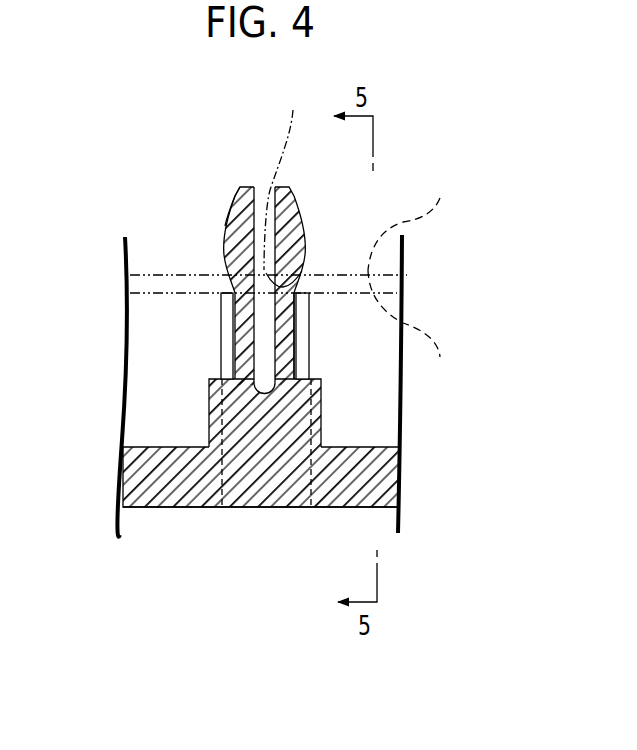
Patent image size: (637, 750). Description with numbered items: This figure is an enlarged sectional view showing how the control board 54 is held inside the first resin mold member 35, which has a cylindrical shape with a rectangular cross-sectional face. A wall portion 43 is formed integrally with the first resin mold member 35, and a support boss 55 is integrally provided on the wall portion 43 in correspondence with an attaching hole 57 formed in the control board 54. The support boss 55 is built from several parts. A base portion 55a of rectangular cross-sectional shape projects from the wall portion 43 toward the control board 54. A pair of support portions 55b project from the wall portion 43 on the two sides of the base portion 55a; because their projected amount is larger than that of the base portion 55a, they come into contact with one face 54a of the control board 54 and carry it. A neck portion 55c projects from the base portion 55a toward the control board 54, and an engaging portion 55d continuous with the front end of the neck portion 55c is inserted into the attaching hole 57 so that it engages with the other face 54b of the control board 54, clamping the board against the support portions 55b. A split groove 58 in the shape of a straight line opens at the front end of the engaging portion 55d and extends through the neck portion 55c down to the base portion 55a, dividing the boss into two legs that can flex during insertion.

The first resin mold member 35 is at (259, 511).
The wall portion 43 is at (168, 483).
The control board 54 is at (407, 278).
The one face of the control board 54a is at (412, 329).
The other face of the control board 54b is at (414, 219).
The support boss 55 is at (213, 238).
The base portion 55a is at (209, 417).
The support portion 55b is at (309, 308).
The neck portion 55c is at (220, 340).
The engaging portion 55d is at (238, 205).
The attaching hole 57 is at (284, 183).
The split groove 58 is at (258, 205).